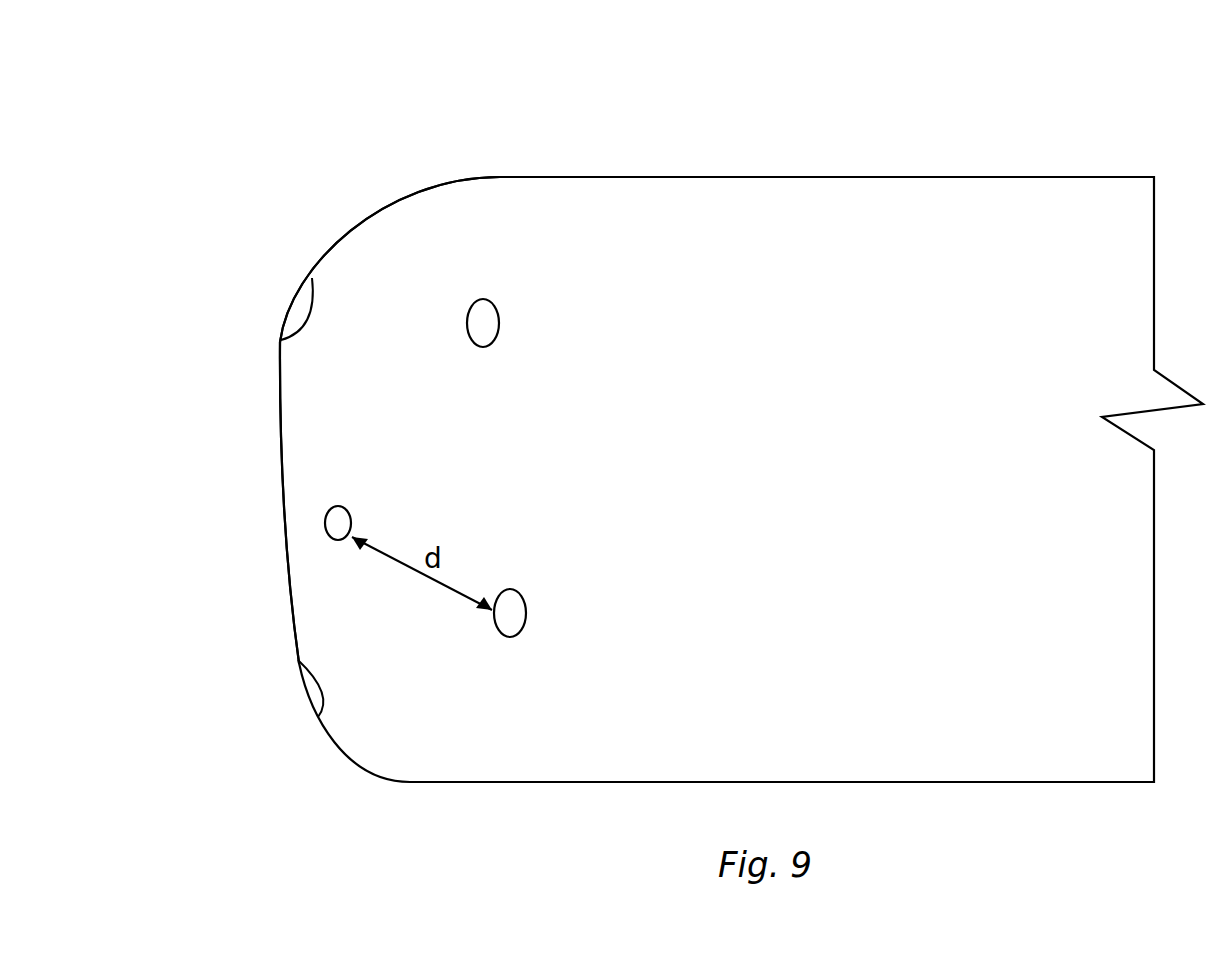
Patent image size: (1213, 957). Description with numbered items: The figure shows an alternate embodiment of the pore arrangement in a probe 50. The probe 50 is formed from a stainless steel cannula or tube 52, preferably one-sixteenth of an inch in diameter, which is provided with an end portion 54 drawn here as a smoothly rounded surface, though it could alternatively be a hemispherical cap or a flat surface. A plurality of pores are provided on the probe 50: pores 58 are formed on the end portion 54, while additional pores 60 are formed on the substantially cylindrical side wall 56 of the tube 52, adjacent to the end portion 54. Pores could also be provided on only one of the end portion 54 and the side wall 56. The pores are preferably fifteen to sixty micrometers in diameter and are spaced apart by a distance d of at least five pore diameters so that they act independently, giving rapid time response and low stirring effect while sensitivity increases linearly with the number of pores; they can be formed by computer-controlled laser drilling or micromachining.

The probe 50 is at (750, 41).
The tube 52 is at (860, 168).
The end portion 54 is at (282, 468).
The side wall 56 is at (535, 175).
The pores 58 is at (290, 310).
The pores 60 is at (499, 325).